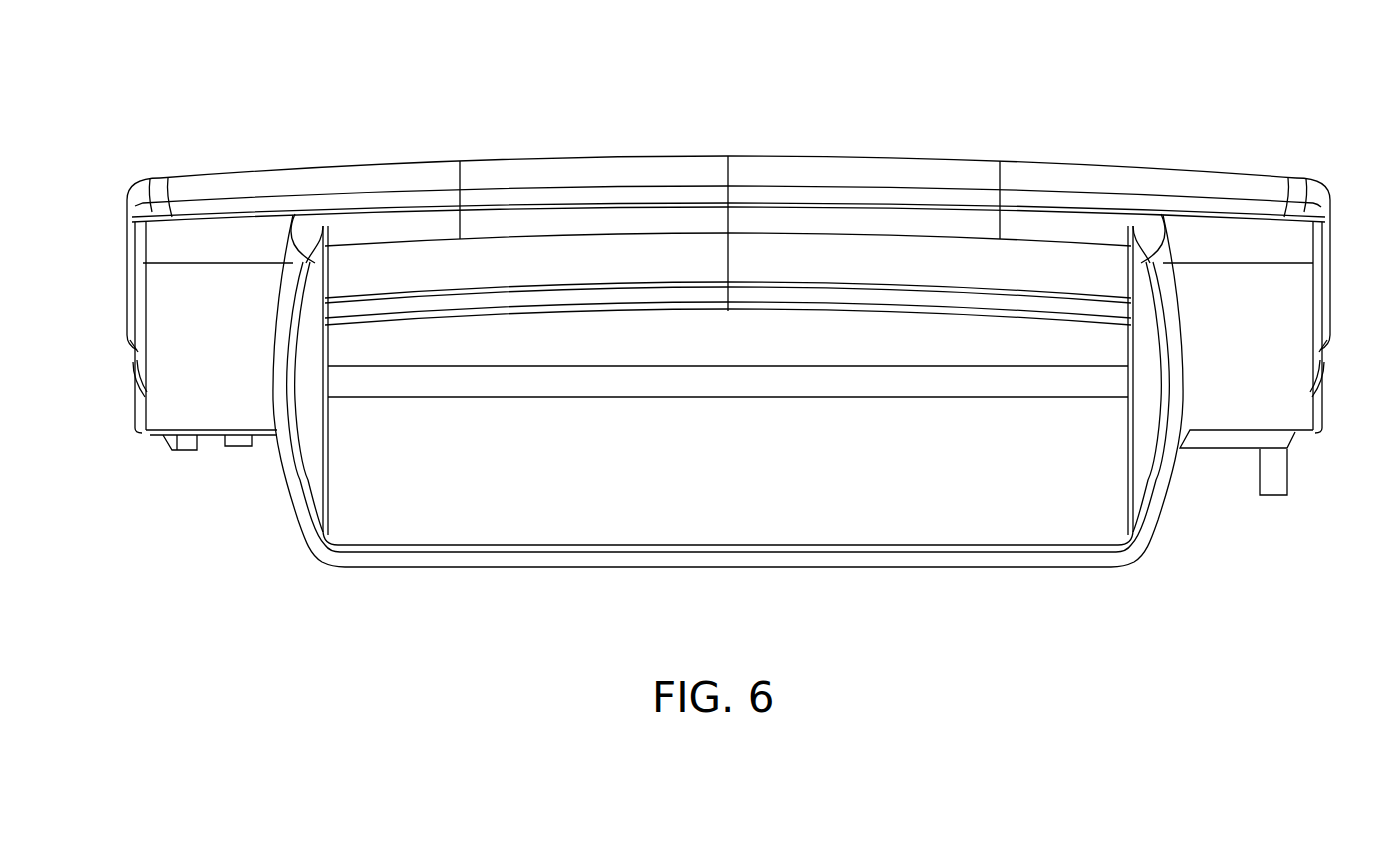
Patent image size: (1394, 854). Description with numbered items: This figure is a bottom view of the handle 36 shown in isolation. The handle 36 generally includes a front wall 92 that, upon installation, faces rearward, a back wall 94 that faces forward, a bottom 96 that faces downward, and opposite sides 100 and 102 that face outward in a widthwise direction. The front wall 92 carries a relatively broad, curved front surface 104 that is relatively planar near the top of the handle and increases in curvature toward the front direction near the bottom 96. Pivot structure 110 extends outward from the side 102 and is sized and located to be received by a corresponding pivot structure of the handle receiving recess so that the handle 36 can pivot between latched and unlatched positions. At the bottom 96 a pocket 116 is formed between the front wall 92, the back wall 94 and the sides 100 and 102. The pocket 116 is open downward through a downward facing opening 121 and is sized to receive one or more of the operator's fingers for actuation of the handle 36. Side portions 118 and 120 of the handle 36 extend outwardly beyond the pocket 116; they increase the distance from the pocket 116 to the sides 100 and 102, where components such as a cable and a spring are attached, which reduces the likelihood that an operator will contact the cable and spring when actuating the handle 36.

The handle 36 is at (1255, 117).
The front surface 104 is at (280, 170).
The front wall 92 is at (530, 170).
The bottom 96 is at (757, 220).
The side portion 120 is at (1220, 262).
The side 100 is at (128, 288).
The side 102 is at (1330, 290).
The side portion 118 is at (162, 383).
The pivot structure 110 is at (1322, 380).
The pocket 116 is at (450, 508).
The downward facing opening 121 is at (860, 520).
The back wall 94 is at (977, 567).